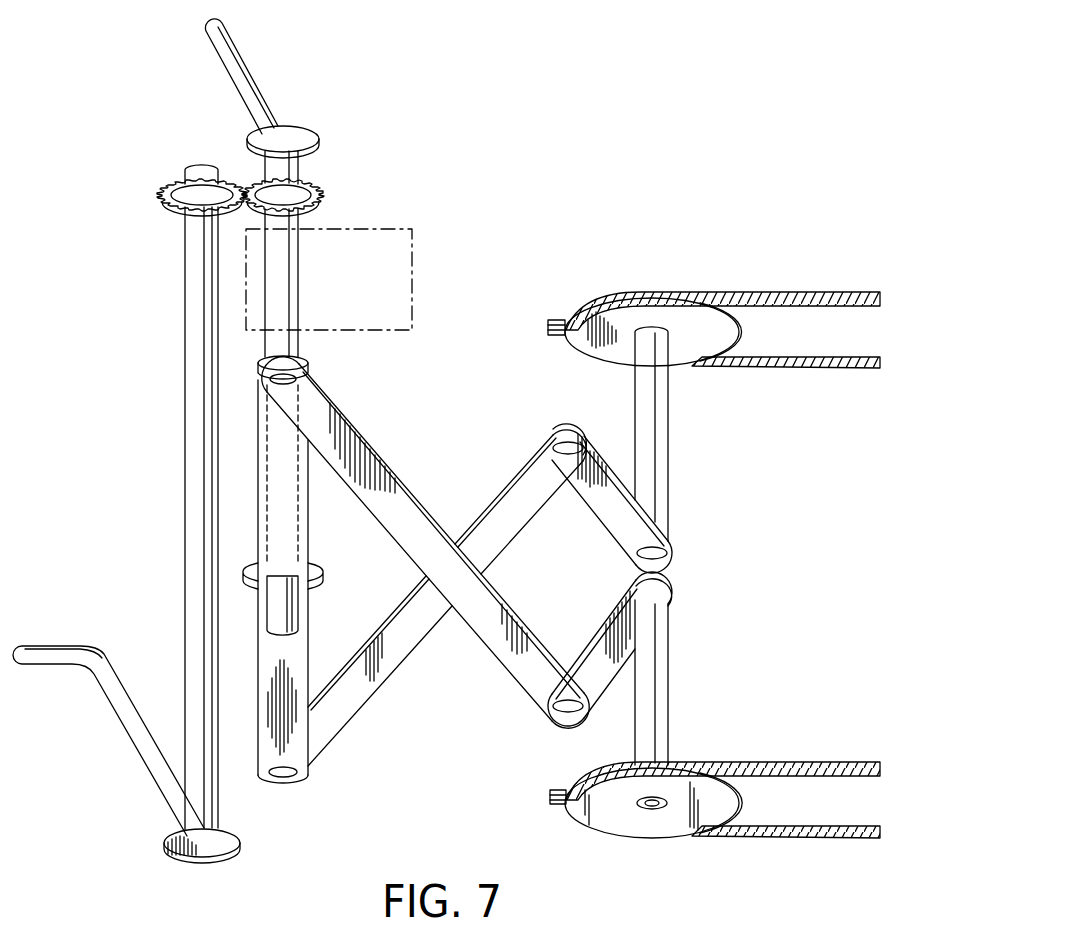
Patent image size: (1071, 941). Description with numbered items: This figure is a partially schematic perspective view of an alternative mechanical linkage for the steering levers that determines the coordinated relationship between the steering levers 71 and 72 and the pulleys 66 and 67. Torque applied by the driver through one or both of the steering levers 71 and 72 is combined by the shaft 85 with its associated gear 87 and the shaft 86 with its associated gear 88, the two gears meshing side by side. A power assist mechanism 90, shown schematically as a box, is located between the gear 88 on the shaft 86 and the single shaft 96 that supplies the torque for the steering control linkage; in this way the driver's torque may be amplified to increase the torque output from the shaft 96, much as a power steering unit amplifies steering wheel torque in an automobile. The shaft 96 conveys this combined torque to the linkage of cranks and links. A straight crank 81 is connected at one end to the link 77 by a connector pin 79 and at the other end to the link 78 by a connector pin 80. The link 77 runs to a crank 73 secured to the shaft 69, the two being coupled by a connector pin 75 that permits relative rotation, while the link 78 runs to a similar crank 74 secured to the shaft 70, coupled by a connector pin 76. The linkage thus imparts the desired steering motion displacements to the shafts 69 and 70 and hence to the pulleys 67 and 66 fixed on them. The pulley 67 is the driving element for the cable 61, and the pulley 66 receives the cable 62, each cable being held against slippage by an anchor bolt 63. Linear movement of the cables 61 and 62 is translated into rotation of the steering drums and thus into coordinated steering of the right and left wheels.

The cable 61 is at (750, 763).
The cable 62 is at (786, 365).
The anchor bolt 63 is at (548, 323).
The pulley 66 is at (578, 340).
The pulley 67 is at (613, 812).
The shaft 69 is at (655, 689).
The shaft 70 is at (660, 455).
The steering lever 71 is at (153, 765).
The steering lever 72 is at (244, 69).
The crank 73 is at (602, 645).
The crank 74 is at (618, 513).
The connector pin 75 is at (563, 707).
The connector pin 76 is at (563, 445).
The link 77 is at (492, 615).
The link 78 is at (490, 520).
The connector pin 79 is at (283, 778).
The connector pin 80 is at (294, 381).
The straight crank 81 is at (312, 568).
The shaft 85 is at (193, 676).
The shaft 86 is at (299, 160).
The gear 87 is at (161, 196).
The gear 88 is at (320, 196).
The power assist mechanism 90 is at (404, 290).
The shaft 96 is at (290, 605).